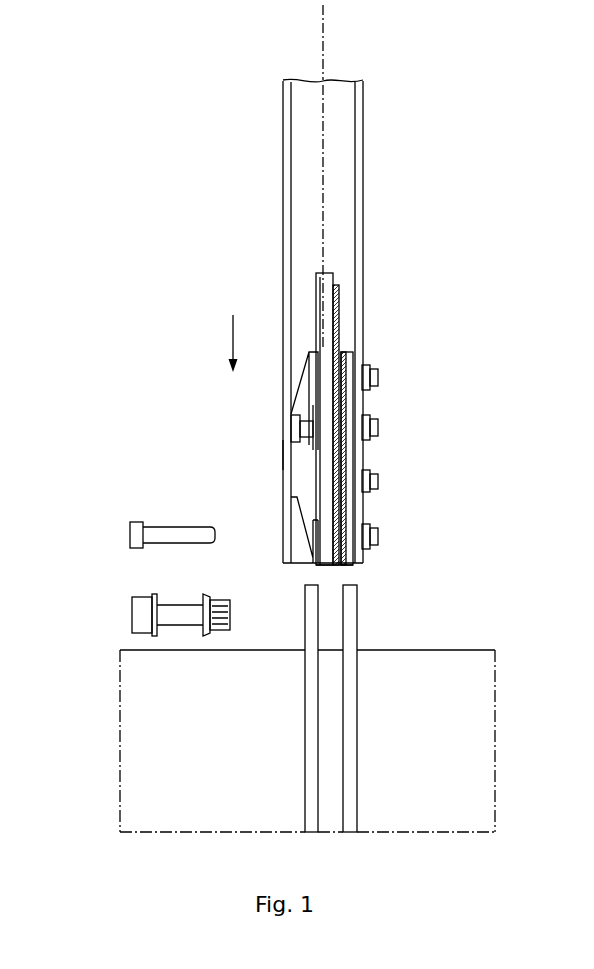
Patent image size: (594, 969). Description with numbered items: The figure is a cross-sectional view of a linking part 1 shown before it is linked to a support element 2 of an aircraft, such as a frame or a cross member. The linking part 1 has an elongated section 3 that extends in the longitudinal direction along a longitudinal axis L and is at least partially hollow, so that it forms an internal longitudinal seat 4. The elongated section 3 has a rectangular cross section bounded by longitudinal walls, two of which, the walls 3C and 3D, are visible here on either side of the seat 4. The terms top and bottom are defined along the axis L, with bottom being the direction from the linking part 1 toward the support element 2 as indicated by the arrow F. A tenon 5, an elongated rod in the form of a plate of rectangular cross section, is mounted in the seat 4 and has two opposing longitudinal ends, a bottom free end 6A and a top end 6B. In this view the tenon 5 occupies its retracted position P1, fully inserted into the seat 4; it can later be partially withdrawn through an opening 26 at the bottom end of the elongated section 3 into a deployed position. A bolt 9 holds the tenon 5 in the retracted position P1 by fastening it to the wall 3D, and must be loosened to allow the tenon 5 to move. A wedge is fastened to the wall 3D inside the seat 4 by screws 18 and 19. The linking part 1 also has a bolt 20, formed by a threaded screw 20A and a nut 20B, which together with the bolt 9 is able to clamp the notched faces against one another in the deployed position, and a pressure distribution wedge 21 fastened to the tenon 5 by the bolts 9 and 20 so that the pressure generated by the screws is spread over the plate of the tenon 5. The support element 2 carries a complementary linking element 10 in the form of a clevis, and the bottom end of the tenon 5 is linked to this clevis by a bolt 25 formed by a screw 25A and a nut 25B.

The linking part 1 is at (155, 245).
The support element 2 is at (462, 650).
The elongated section 3 is at (332, 321).
The longitudinal wall 3C is at (283, 105).
The longitudinal wall 3D is at (363, 115).
The internal longitudinal seat 4 is at (332, 255).
The tenon 5 is at (339, 295).
The bottom longitudinal end 6A is at (285, 557).
The top longitudinal end 6B is at (296, 285).
The bolt 9 is at (276, 427).
The complementary linking element 10 is at (370, 605).
The screw 18 is at (378, 375).
The screw 19 is at (378, 482).
The bolt 20 is at (116, 486).
The threaded screw 20A is at (160, 522).
The nut 20B is at (392, 528).
The pressure distribution wedge 21 is at (300, 495).
The bolt 25 is at (150, 589).
The screw 25A is at (140, 615).
The nut 25B is at (215, 603).
The opening 26 is at (345, 574).
The arrow F is at (233, 333).
The longitudinal axis L is at (323, 30).
The retracted position P1 is at (258, 458).